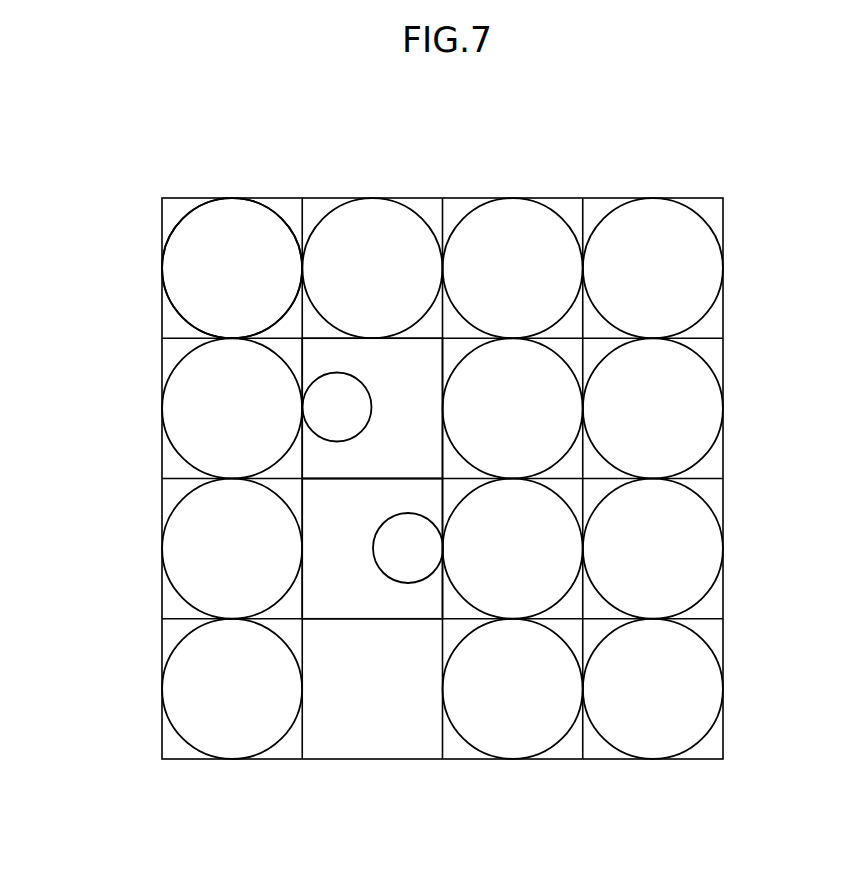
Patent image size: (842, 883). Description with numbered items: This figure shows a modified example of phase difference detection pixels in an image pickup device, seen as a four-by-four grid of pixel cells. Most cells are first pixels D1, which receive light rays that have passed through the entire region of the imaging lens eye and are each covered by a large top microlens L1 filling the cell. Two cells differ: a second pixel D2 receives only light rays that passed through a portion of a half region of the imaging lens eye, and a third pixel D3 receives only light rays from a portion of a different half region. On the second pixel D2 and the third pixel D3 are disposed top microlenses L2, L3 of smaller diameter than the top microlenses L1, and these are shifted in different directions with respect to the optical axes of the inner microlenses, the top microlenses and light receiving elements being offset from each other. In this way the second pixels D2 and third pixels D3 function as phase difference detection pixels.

The first pixels D1 is at (287, 215).
The second pixels D2 is at (407, 392).
The third pixels D3 is at (333, 557).
The top microlenses for first pixels L1 is at (188, 278).
The top microlenses for second pixels L2 is at (322, 410).
The top microlenses for third pixels L3 is at (410, 557).